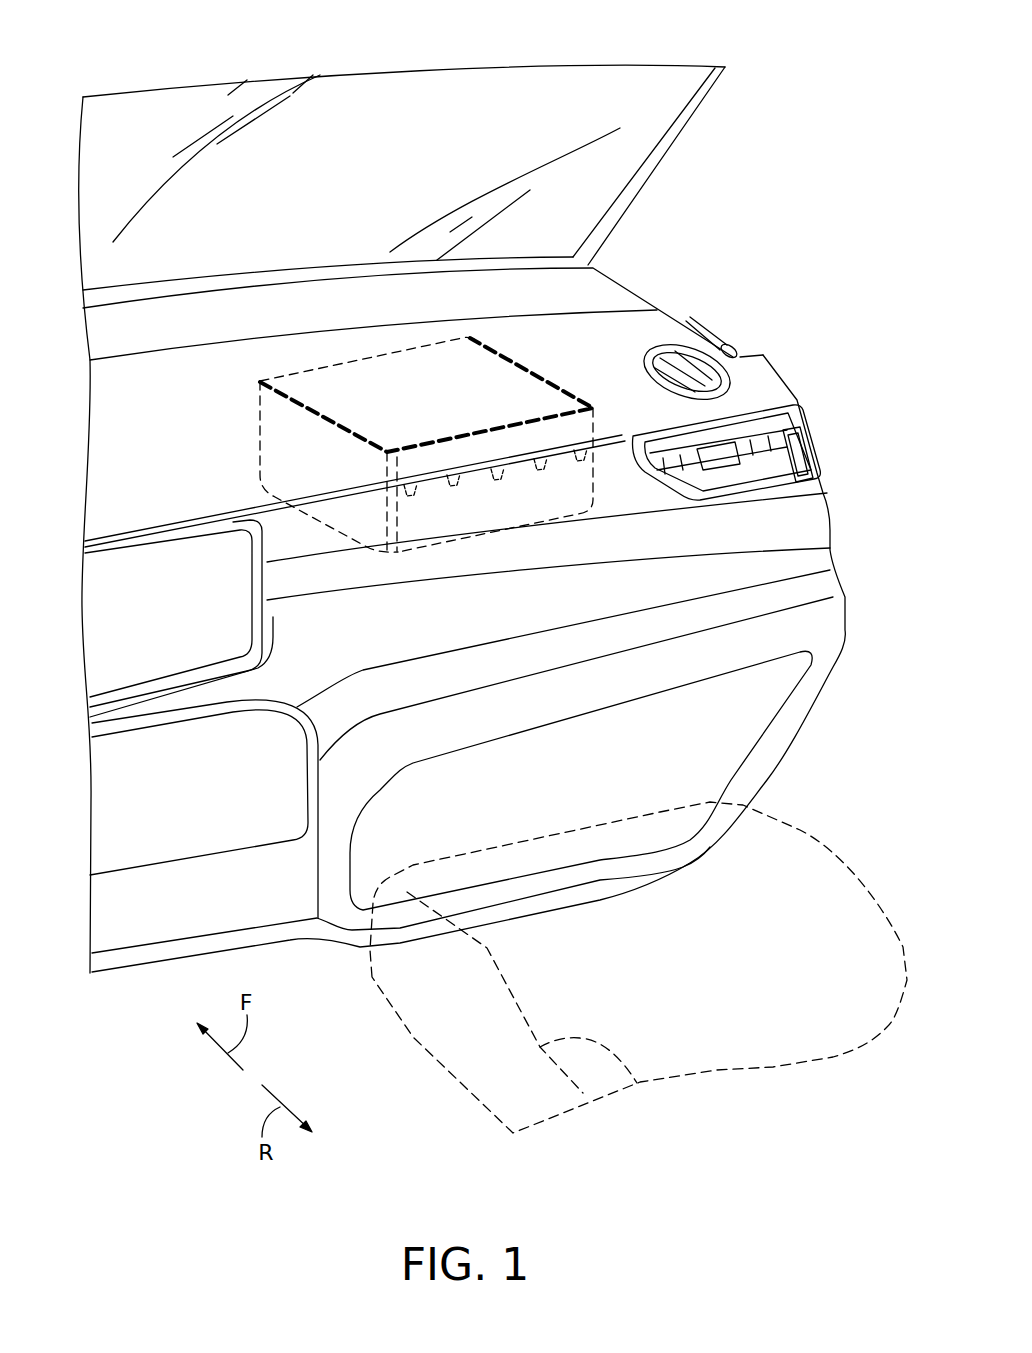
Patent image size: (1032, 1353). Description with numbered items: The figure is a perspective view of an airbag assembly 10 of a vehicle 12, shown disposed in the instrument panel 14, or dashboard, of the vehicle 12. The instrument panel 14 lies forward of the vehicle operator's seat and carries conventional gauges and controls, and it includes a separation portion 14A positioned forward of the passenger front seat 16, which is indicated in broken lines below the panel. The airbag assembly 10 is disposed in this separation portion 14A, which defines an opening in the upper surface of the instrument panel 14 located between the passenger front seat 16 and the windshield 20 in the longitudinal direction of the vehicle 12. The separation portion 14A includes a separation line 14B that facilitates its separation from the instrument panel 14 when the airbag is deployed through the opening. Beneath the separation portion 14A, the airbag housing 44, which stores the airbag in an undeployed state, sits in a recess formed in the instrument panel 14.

The airbag assembly 10 is at (363, 612).
The vehicle 12 is at (439, 535).
The instrument panel 14 is at (138, 473).
The separation portion 14A is at (370, 385).
The separation line 14B is at (391, 462).
The passenger front seat 16 is at (636, 1085).
The windshield 20 is at (453, 118).
The airbag housing 44 is at (420, 548).